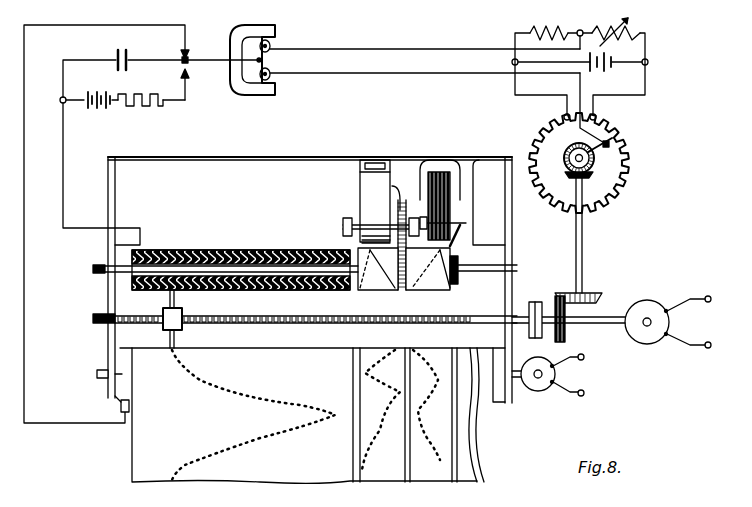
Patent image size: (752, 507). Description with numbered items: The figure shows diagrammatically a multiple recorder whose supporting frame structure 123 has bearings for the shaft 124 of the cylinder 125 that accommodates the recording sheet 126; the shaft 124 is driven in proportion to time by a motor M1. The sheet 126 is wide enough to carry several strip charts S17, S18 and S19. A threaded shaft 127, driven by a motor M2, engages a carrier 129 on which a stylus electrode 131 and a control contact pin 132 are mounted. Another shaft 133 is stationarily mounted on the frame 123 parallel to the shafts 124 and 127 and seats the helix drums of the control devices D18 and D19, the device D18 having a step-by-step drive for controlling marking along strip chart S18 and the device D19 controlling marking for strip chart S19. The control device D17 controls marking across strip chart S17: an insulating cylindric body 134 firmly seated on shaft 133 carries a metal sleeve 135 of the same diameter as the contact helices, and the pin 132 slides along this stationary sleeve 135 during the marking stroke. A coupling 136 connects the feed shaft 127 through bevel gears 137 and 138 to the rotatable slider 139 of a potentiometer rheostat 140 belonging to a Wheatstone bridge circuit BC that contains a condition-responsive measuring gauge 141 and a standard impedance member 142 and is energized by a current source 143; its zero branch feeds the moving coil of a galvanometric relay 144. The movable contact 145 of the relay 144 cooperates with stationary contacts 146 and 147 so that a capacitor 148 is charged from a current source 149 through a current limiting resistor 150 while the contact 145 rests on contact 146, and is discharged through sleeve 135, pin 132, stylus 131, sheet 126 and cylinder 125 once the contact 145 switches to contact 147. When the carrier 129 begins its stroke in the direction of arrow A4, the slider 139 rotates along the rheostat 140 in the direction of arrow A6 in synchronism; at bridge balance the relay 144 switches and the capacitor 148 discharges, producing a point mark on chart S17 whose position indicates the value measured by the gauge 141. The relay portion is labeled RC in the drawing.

The supporting frame structure 123 is at (506, 234).
The shaft 124 is at (97, 377).
The cylinder 125 is at (119, 401).
The recording sheet 126 is at (140, 454).
The threaded shaft 127 is at (300, 325).
The carrier 129 is at (166, 329).
The stylus electrode 131 is at (177, 338).
The contact pin 132 is at (177, 302).
The shaft 133 is at (93, 269).
The insulating cylindric body 134 is at (253, 250).
The metal sleeve 135 is at (282, 294).
The coupling 136 is at (530, 308).
The bevel gear 137 is at (591, 299).
The bevel gear 138 is at (572, 146).
The rotatable slider 139 is at (612, 140).
The potentiometer rheostat 140 is at (630, 178).
The measuring gauge 141 is at (610, 30).
The standard impedance member 142 is at (540, 31).
The current source 143 is at (604, 72).
The galvanometric relay 144 is at (248, 92).
The movable contact 145 is at (207, 46).
The stationary contact 146 is at (186, 72).
The stationary contact 147 is at (183, 56).
The capacitor 148 is at (116, 57).
The current source 149 is at (85, 106).
The current limiting resistor 150 is at (155, 106).
The relay circuit RC is at (58, 88).
The Wheatstone bridge circuit BC is at (550, 96).
The control device D17 is at (212, 132).
The control device D18 is at (388, 153).
The control device D19 is at (450, 153).
The arrow A4 is at (375, 301).
The arrow A6 is at (550, 152).
The motor M1 is at (537, 391).
The motor M2 is at (645, 304).
The strip chart S17 is at (333, 478).
The strip chart S18 is at (398, 478).
The strip chart S19 is at (448, 478).